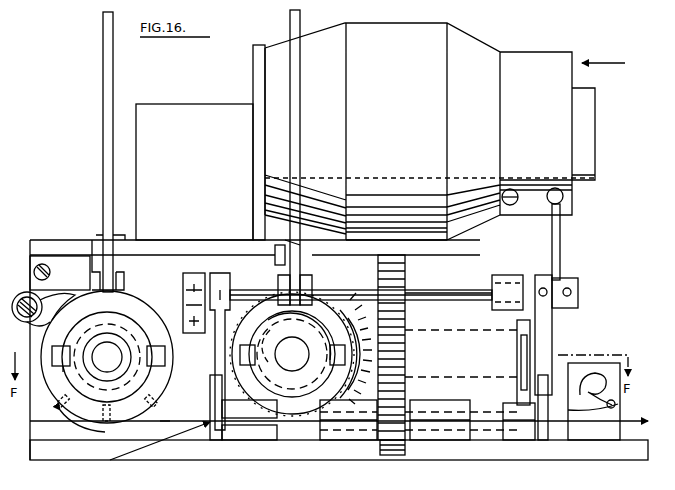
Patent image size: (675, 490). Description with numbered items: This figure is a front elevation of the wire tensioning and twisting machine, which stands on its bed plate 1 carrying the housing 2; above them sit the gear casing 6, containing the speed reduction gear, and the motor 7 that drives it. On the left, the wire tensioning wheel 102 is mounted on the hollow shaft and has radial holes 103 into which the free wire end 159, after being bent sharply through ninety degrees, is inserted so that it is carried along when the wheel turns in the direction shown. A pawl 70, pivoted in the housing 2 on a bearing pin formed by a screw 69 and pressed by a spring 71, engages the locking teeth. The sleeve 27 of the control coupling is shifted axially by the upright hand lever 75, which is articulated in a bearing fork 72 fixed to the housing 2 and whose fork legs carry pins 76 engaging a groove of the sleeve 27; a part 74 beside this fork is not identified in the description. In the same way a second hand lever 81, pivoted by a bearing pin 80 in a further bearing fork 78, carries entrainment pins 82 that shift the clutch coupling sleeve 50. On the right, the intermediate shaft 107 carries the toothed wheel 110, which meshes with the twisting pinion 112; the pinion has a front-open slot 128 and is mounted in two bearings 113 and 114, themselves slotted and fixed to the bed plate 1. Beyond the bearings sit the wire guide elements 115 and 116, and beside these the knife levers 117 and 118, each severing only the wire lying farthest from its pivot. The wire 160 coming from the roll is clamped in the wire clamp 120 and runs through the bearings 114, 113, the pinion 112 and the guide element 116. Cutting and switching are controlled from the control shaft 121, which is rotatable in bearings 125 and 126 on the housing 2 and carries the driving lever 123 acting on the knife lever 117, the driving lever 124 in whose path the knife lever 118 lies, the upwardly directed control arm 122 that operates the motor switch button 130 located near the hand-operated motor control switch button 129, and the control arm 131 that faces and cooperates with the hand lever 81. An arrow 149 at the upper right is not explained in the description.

The bed plate 1 is at (612, 452).
The housing 2 is at (178, 240).
The gear casing 6 is at (184, 106).
The motor 7 is at (430, 131).
The sleeve of control coupling 27 is at (60, 352).
The clutch coupling sleeve 50 is at (285, 405).
The screw 69 is at (30, 326).
The pawl 70 is at (30, 292).
The spring 71 is at (70, 282).
The bearing fork 72 is at (92, 238).
The guide 74 is at (124, 283).
The hand lever 75 is at (113, 56).
The pin 76 is at (63, 367).
The bearing fork 78 is at (302, 240).
The bearing pin 80 is at (275, 259).
The hand lever 81 is at (290, 31).
The entrainment pins 82 is at (255, 365).
The wire tensioning wheel 102 is at (165, 381).
The radial holes 103 is at (55, 412).
The intermediate shaft 107 is at (462, 331).
The toothed wheel 110 is at (405, 331).
The twisting pinion 112 is at (392, 455).
The bearing 113 is at (348, 441).
The bearing 114 is at (448, 441).
The wire guide element 115 is at (522, 441).
The guide element 116 is at (258, 441).
The knife lever 117 is at (544, 441).
The knife lever 118 is at (216, 442).
The wire clamp 120 is at (615, 404).
The control shaft 121 is at (436, 290).
The control arm 122 is at (561, 260).
The driving lever 123 is at (552, 320).
The driving lever 124 is at (214, 400).
The bearing 125 is at (507, 275).
The bearing 126 is at (183, 282).
The slot 128 is at (400, 417).
The hand-operated motor control switch button 129 is at (502, 197).
The switch button 130 is at (564, 197).
The control arm 131 is at (312, 280).
The direction arrow 149 is at (603, 52).
The free wire end 159 is at (160, 421).
The wire 160 is at (150, 450).